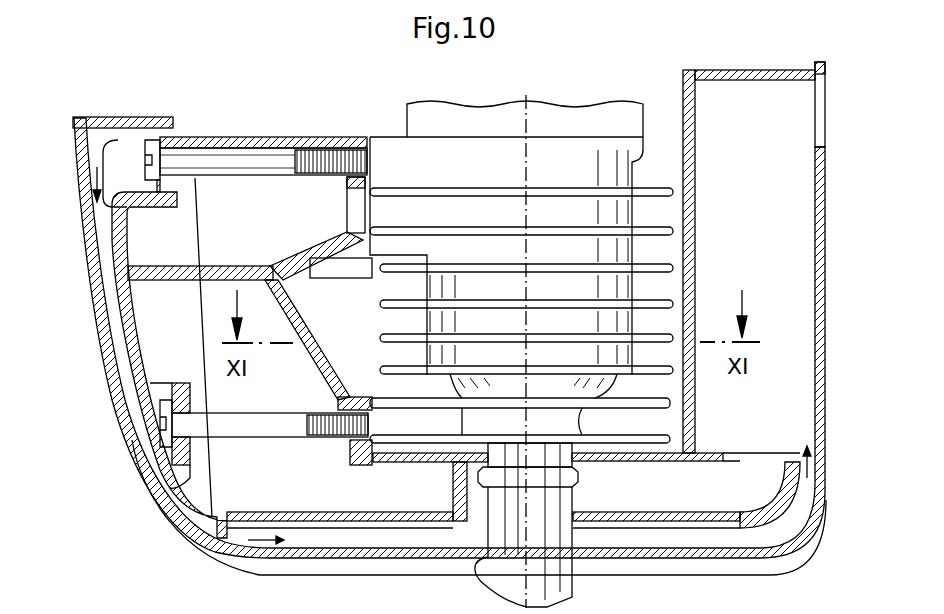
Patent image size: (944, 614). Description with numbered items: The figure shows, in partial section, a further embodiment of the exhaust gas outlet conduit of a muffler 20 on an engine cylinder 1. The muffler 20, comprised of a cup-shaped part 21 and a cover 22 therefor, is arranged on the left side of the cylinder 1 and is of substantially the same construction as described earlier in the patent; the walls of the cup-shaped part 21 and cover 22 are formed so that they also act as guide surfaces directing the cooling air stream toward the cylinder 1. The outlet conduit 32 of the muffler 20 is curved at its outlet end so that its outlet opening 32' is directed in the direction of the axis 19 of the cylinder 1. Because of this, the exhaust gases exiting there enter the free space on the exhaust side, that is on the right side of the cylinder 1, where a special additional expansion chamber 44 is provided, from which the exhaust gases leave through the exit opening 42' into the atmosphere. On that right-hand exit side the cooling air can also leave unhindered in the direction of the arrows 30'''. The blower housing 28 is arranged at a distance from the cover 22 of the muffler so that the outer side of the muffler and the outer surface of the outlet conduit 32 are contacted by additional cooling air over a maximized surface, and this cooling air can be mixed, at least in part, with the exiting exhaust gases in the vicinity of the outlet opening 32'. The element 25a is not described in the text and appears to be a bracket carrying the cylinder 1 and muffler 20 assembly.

The cylinder 1 is at (433, 208).
The axis of cylinder 19 is at (526, 288).
The muffler 20 is at (138, 393).
The cup-shaped part 21 is at (208, 143).
The muffler cover 22 is at (122, 203).
The support bracket 25a is at (320, 290).
The blower housing 28 is at (132, 437).
The arrows indicating cooling air exit direction 30''' is at (843, 473).
The outlet conduit 32 is at (513, 533).
The outlet opening 32' is at (792, 506).
The exit opening 42' is at (840, 104).
The additional expansion chamber 44 is at (710, 102).